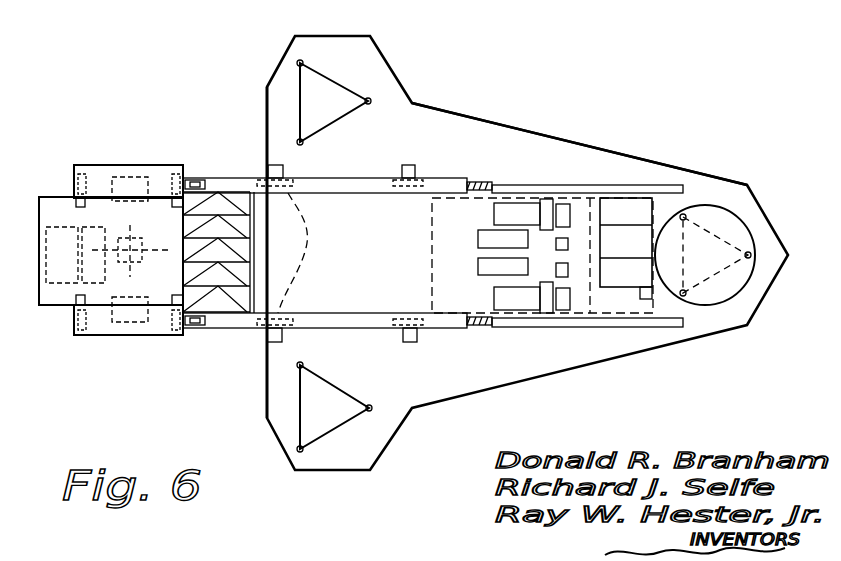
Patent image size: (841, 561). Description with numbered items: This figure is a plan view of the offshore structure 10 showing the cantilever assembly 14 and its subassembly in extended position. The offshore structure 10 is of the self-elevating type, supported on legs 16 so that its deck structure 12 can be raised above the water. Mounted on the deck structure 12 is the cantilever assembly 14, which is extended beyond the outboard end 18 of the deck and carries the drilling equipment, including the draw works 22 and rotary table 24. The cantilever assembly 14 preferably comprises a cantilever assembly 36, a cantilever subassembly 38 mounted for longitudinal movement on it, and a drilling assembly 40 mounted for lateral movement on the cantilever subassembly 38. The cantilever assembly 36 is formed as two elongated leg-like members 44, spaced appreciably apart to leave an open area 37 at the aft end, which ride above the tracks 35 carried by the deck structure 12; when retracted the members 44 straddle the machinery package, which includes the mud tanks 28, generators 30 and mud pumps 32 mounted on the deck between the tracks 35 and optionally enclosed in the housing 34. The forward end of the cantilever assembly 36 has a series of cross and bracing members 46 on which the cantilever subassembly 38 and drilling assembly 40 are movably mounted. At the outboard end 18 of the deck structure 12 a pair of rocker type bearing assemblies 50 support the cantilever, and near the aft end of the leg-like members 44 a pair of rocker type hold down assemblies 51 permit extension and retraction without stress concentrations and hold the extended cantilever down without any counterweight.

The offshore structure 10 is at (458, 110).
The deck structure 12 is at (490, 132).
The cantilever assembly 14 is at (213, 172).
The legs 16 is at (297, 86).
The outboard end 18 is at (267, 393).
The draw works 22 is at (92, 228).
The rotary table 24 is at (140, 242).
The mud tanks 28 is at (640, 205).
The generators 30 is at (516, 206).
The mud pumps 32 is at (478, 268).
The housing 34 is at (432, 223).
The tracks 35 is at (637, 185).
The cantilever assembly 36 is at (220, 330).
The open area 37 is at (493, 181).
The cantilever subassembly 38 is at (127, 337).
The drilling assembly 40 is at (55, 195).
The leg-like members 44 is at (357, 189).
The cross and bracing members 46 is at (230, 247).
The rocker type bearing assemblies 50 is at (298, 253).
The rocker type hold down assemblies 51 is at (392, 174).